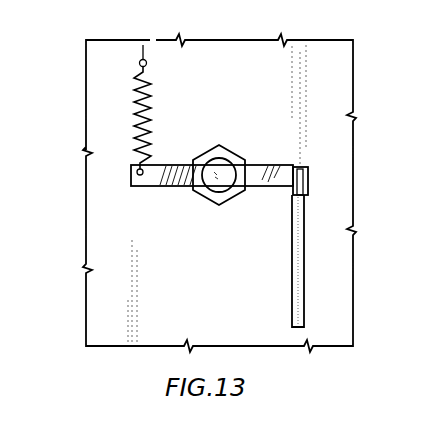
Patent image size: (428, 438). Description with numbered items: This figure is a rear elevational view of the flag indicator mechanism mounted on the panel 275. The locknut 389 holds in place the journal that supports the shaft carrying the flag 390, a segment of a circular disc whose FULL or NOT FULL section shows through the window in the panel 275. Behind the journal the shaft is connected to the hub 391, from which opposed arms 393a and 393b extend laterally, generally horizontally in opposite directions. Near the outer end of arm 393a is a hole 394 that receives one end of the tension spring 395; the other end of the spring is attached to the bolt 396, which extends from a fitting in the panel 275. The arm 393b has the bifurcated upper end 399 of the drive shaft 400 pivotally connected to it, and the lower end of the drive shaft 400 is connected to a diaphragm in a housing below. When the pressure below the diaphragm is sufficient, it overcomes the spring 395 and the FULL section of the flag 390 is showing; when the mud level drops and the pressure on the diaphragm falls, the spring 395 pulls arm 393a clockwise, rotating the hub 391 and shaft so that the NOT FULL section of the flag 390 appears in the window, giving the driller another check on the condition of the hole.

The panel 275 is at (202, 302).
The locknut 389 is at (205, 153).
The flag 390 is at (5, 158).
The hub 391 is at (232, 161).
The arm 393a is at (148, 186).
The arm 393b is at (300, 168).
The hole 394 is at (130, 177).
The tension spring 395 is at (150, 102).
The bolt 396 is at (143, 45).
The bifurcated upper end 399 is at (304, 181).
The drive shaft 400 is at (304, 268).